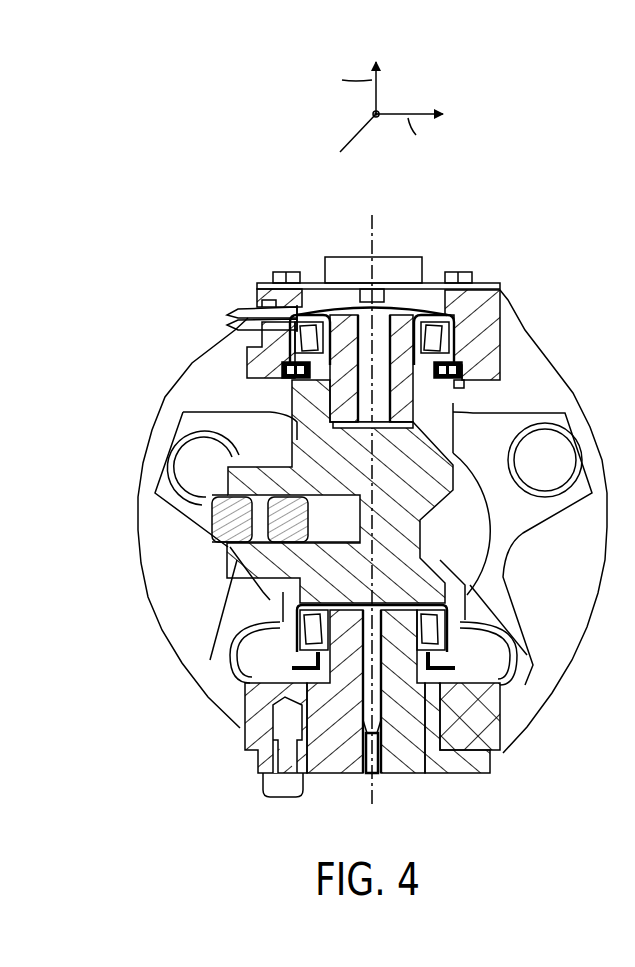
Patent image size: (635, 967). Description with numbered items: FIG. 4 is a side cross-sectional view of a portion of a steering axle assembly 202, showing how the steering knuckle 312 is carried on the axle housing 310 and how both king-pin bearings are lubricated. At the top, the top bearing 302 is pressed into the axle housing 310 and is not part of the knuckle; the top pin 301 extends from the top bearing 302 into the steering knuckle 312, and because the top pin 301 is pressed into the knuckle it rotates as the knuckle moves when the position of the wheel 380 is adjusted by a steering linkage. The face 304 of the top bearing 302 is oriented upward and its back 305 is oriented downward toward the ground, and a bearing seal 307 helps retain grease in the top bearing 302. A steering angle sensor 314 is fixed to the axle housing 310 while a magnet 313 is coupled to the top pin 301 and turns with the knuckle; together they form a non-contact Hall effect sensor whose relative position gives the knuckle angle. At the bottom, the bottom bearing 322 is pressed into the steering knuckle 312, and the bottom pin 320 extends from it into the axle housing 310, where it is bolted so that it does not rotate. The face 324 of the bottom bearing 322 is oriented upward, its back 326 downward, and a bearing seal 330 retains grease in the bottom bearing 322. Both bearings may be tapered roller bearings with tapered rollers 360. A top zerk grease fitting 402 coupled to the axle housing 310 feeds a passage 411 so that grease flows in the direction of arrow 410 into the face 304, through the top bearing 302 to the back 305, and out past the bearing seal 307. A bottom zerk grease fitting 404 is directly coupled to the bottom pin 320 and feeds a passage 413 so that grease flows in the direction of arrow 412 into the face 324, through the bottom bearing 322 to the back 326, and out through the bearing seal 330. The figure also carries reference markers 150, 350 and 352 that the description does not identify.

The coordinate system 150 is at (333, 52).
The steering axle assembly 202 is at (206, 237).
The top pin 301 is at (440, 410).
The top bearing 302 is at (292, 338).
The face of top bearing 304 is at (434, 344).
The back of top bearing 305 is at (463, 372).
The bearing seal 307 is at (460, 388).
The axle housing 310 is at (255, 360).
The steering knuckle 312 is at (420, 500).
The magnet 313 is at (358, 309).
The steering angle sensor 314 is at (334, 268).
The bottom pin 320 is at (448, 778).
The bottom bearing 322 is at (297, 640).
The face of bottom bearing 324 is at (434, 645).
The back of bottom bearing 326 is at (497, 740).
The bearing seal 330 is at (456, 668).
The rotation axis 350 is at (372, 222).
The axis end 352 is at (374, 805).
The rollers 360 is at (446, 300).
The wheel 380 is at (138, 556).
The top zerk grease fitting 402 is at (228, 313).
The bottom zerk grease fitting 404 is at (372, 772).
The arrow 410 is at (278, 326).
The passage 411 is at (272, 316).
The arrow 412 is at (365, 722).
The passage 413 is at (381, 718).